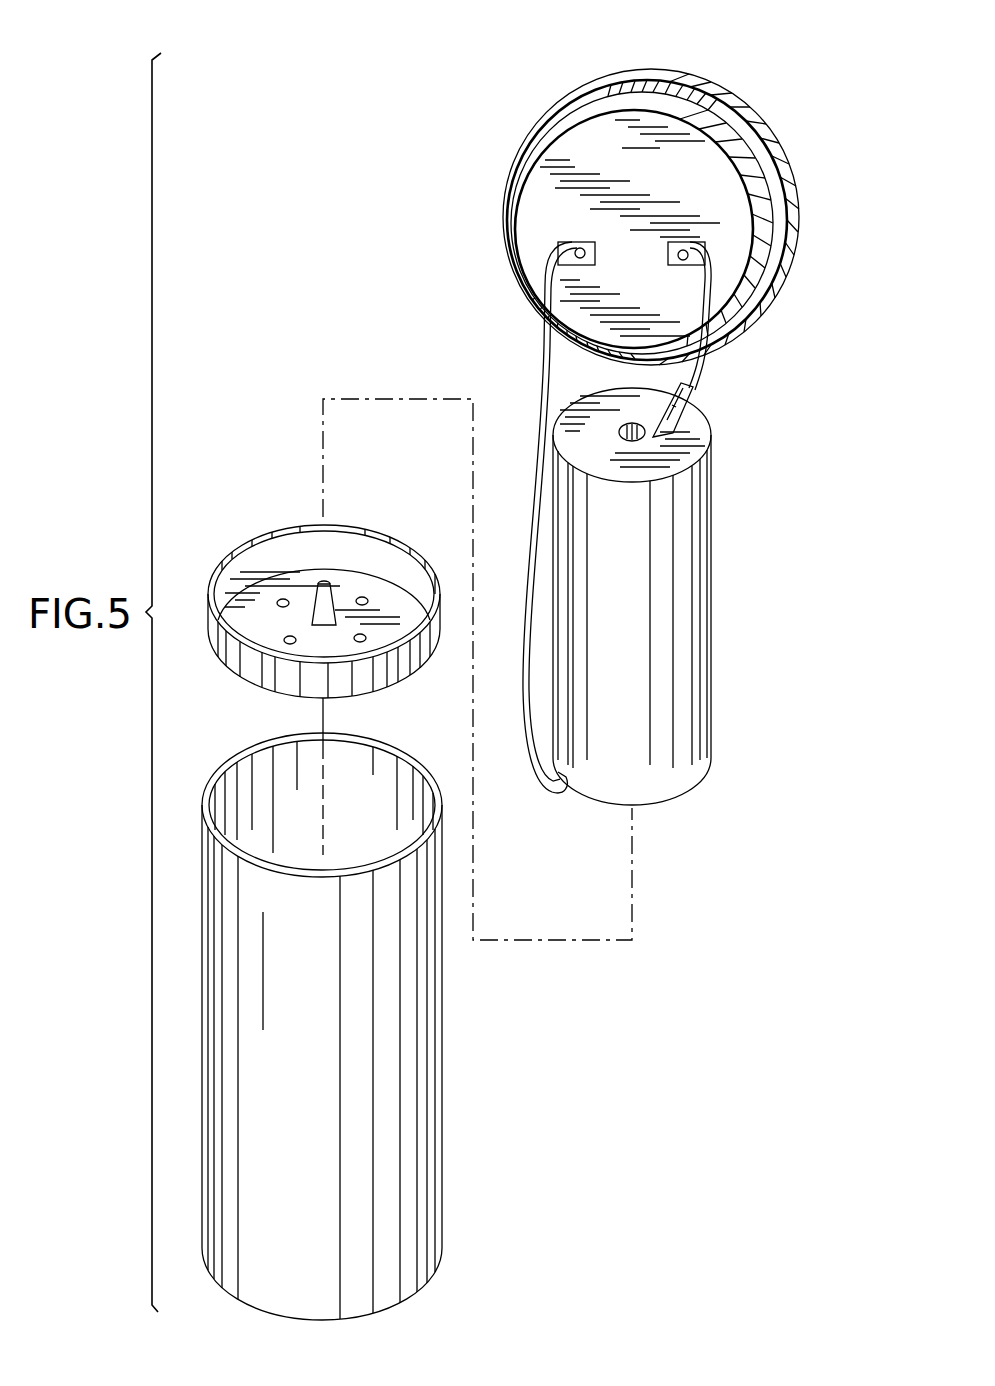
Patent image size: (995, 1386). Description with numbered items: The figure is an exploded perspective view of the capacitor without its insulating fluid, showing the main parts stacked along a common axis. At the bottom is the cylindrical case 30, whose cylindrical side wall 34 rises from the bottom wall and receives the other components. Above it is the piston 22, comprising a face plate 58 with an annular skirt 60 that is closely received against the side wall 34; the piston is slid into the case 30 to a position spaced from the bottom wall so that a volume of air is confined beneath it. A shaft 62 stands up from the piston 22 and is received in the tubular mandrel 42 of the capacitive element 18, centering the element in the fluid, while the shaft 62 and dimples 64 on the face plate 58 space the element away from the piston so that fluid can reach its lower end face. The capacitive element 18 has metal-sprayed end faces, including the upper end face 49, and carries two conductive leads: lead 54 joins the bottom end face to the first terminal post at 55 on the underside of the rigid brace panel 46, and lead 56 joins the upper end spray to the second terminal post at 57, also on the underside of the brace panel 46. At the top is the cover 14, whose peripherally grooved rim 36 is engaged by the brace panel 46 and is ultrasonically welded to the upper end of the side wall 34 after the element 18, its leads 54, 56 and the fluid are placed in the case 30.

The cover 14 is at (651, 409).
The capacitive element 18 is at (657, 594).
The piston 22 is at (308, 595).
The cylindrical case 30 is at (352, 1026).
The cylindrical side wall 34 is at (420, 1112).
The peripherally grooved rim 36 is at (681, 78).
The tubular mandrel 42 is at (642, 441).
The rigid brace panel 46 is at (700, 150).
The end face 49 is at (697, 420).
The conductive lead 54 is at (545, 358).
The connection of lead to terminal post 55 is at (580, 246).
The conductive lead 56 is at (697, 376).
The connection of lead to terminal post 57 is at (690, 245).
The face plate 58 is at (253, 620).
The annular skirt 60 is at (402, 666).
The shaft 62 is at (318, 582).
The dimples 64 is at (282, 598).